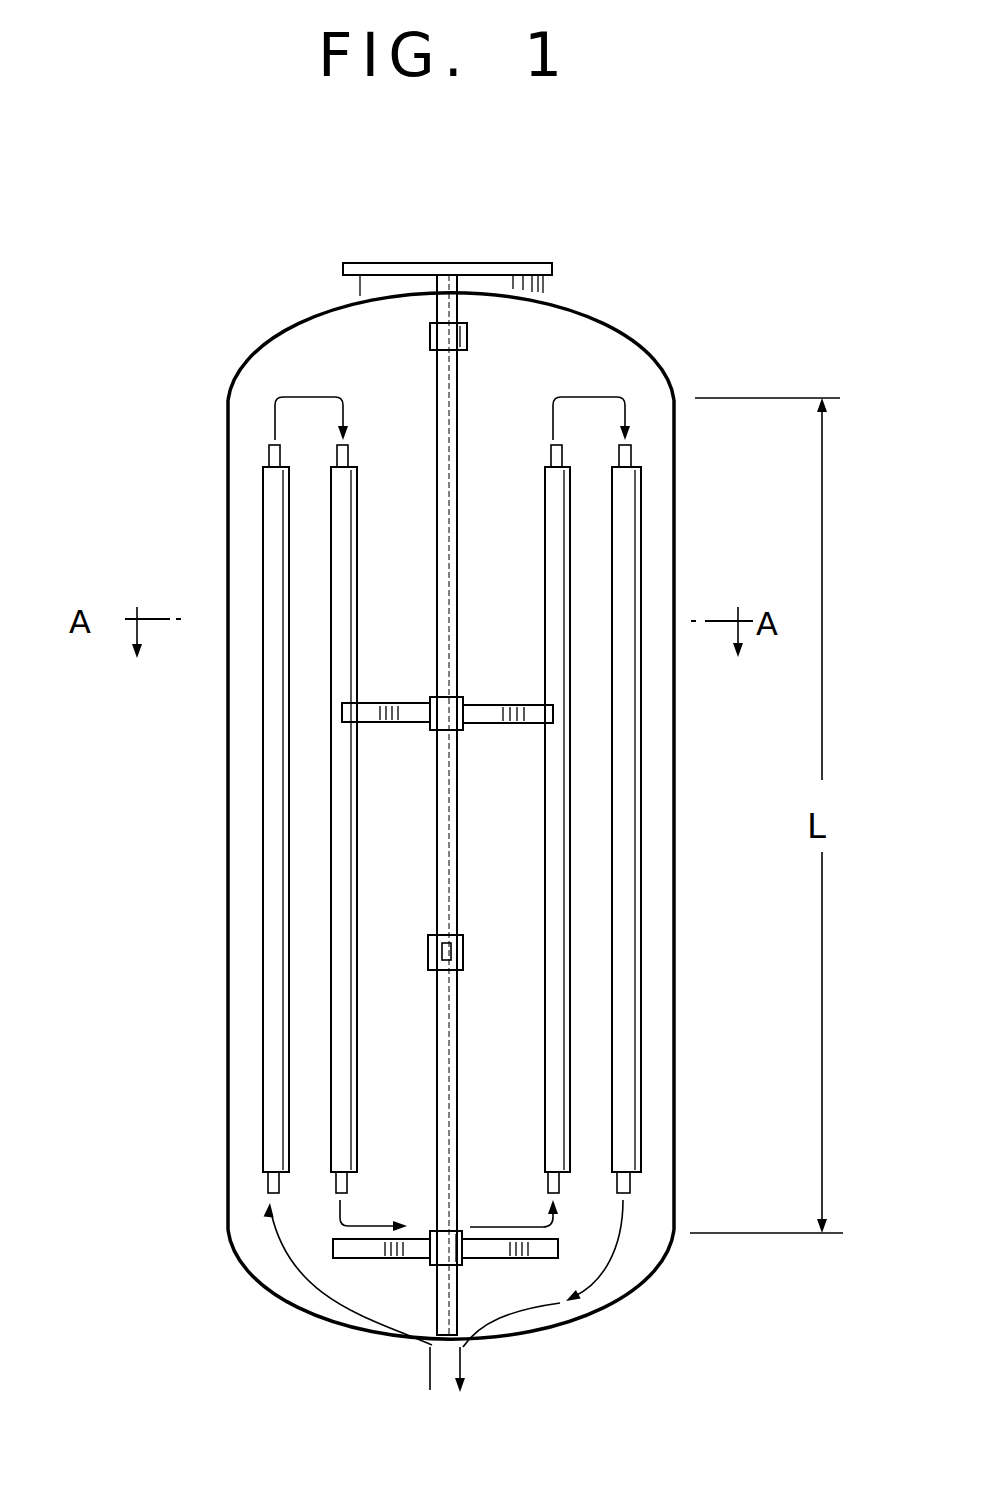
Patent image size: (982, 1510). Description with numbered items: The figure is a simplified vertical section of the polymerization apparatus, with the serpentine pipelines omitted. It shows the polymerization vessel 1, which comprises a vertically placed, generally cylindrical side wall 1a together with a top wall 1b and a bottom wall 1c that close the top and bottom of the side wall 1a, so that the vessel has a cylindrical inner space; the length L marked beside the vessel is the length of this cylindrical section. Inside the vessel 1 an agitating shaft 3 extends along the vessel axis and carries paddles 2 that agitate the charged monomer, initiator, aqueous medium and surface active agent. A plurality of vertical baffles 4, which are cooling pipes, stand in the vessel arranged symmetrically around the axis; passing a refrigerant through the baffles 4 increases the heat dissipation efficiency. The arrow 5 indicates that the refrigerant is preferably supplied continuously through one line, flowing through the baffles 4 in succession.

The polymerization vessel 1 is at (442, 806).
The side wall 1a is at (674, 494).
The top wall 1b is at (625, 318).
The bottom wall 1c is at (270, 1303).
The paddles 2 is at (485, 713).
The agitating shaft 3 is at (458, 415).
The vertical baffles 4 is at (338, 797).
The arrow 5 is at (326, 390).